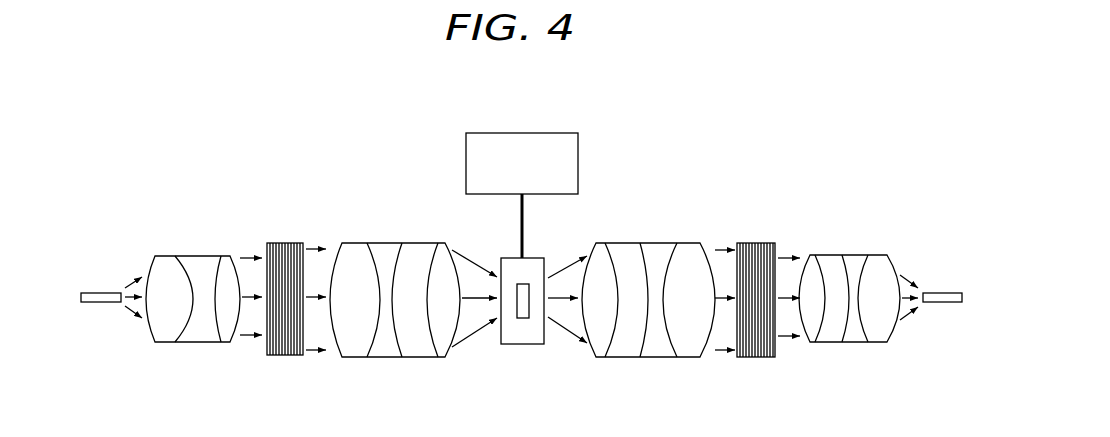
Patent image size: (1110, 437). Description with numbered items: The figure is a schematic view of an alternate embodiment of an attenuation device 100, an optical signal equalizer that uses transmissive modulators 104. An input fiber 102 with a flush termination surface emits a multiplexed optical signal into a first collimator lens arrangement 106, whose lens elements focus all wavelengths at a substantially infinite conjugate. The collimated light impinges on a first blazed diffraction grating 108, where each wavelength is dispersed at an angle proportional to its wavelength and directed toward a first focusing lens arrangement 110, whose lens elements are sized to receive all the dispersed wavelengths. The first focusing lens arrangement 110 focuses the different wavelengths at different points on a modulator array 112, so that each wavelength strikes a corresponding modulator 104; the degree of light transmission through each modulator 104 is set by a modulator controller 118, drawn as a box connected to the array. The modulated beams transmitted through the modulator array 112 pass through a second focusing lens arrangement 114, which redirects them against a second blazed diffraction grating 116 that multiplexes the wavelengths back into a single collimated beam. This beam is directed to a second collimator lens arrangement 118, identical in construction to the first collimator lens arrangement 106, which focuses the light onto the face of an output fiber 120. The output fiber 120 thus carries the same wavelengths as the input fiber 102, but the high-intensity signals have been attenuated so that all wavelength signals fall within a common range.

The attenuation device 100 is at (636, 140).
The input fiber 102 is at (104, 290).
The transmissive modulator 104 is at (522, 318).
The first collimator lens arrangement 106 is at (193, 254).
The first blazed diffraction grating 108 is at (290, 243).
The first focusing lens arrangement 110 is at (382, 243).
The modulator array 112 is at (512, 345).
The second focusing lens arrangement 114 is at (651, 243).
The second blazed diffraction grating 116 is at (753, 243).
The modulator controller / second collimator lens arrangement 118 is at (513, 133).
The output fiber 120 is at (933, 293).